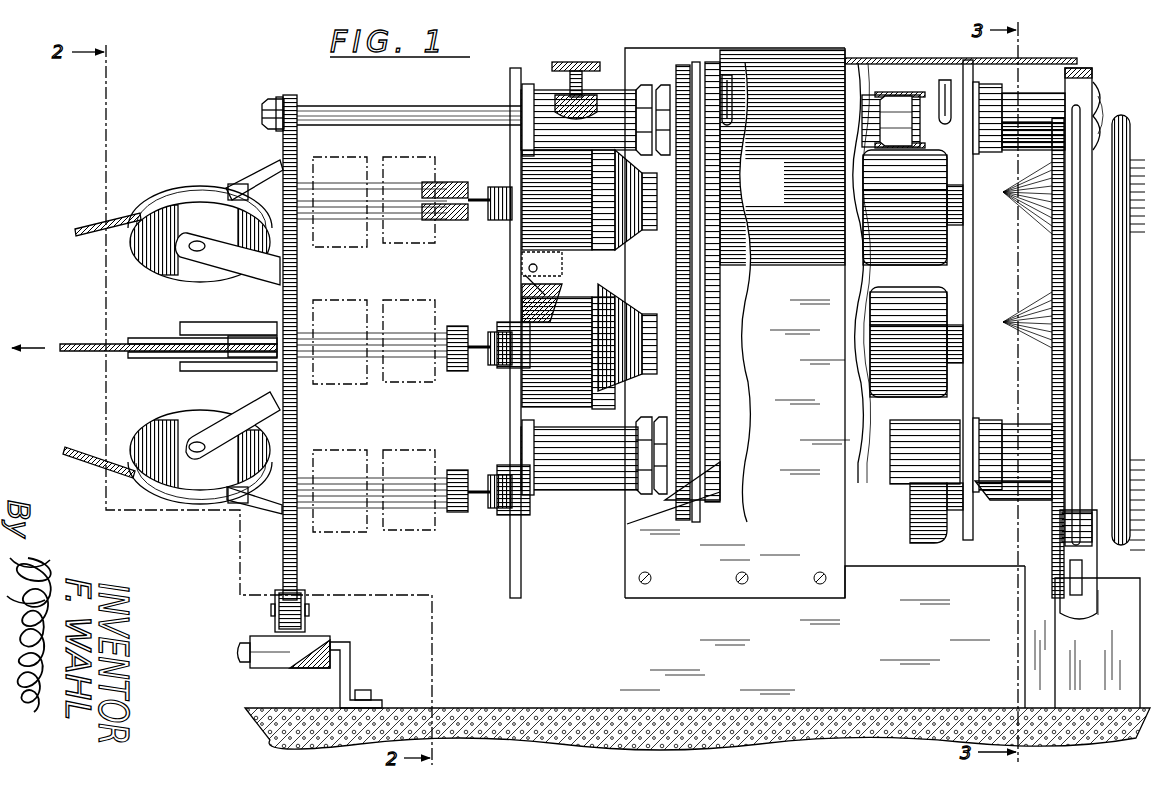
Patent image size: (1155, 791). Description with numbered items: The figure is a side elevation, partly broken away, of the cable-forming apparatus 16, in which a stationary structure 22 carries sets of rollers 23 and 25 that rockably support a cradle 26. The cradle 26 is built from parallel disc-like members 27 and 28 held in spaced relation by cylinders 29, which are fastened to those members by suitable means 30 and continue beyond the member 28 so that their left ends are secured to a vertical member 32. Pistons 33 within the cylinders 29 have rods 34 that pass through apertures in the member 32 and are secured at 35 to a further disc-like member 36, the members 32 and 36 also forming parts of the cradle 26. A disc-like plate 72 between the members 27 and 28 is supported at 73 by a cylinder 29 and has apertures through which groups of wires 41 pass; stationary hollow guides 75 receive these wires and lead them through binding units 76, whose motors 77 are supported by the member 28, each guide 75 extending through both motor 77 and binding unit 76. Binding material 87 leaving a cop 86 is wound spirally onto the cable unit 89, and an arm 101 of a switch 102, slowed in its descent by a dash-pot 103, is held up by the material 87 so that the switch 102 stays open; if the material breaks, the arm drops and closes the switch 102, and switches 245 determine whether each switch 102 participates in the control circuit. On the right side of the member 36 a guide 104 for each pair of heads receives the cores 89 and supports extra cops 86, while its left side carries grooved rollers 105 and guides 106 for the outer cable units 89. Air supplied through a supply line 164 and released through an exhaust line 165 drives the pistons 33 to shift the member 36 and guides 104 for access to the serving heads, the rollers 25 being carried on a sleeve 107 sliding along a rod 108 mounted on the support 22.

The apparatus 16 is at (654, 46).
The stationary structure 22 is at (630, 632).
The rollers 23 is at (1060, 545).
The rollers 25 is at (294, 606).
The cradle 26 is at (1090, 66).
The disc-like member 27 is at (1070, 68).
The disc-like member 28 is at (688, 68).
The cylinders 29 is at (1036, 96).
The securing means 30 is at (645, 86).
The vertical member 32 is at (516, 68).
The pistons 33 is at (910, 100).
The rods 34 is at (432, 110).
The securing point 35 is at (268, 100).
The disc-like member 36 is at (290, 95).
The groups of wires 41 is at (1036, 220).
The disc-like plate 72 is at (974, 280).
The support 73 is at (990, 90).
The hollow guides 75 is at (492, 190).
The binding units 76 is at (637, 240).
The motors 77 is at (740, 160).
The cop 86 is at (348, 256).
The material 87 is at (470, 185).
The cable unit 89 is at (89, 226).
The arm 101 is at (522, 290).
The switch 102 is at (528, 266).
The dash-pot 103 is at (548, 252).
The guide 104 is at (340, 186).
The grooved rollers 105 is at (192, 278).
The guides 106 is at (262, 180).
The sleeve 107 is at (316, 642).
The rod 108 is at (334, 666).
The supply line 164 is at (733, 95).
The exhaust line 165 is at (945, 78).
The switches 245 is at (612, 252).